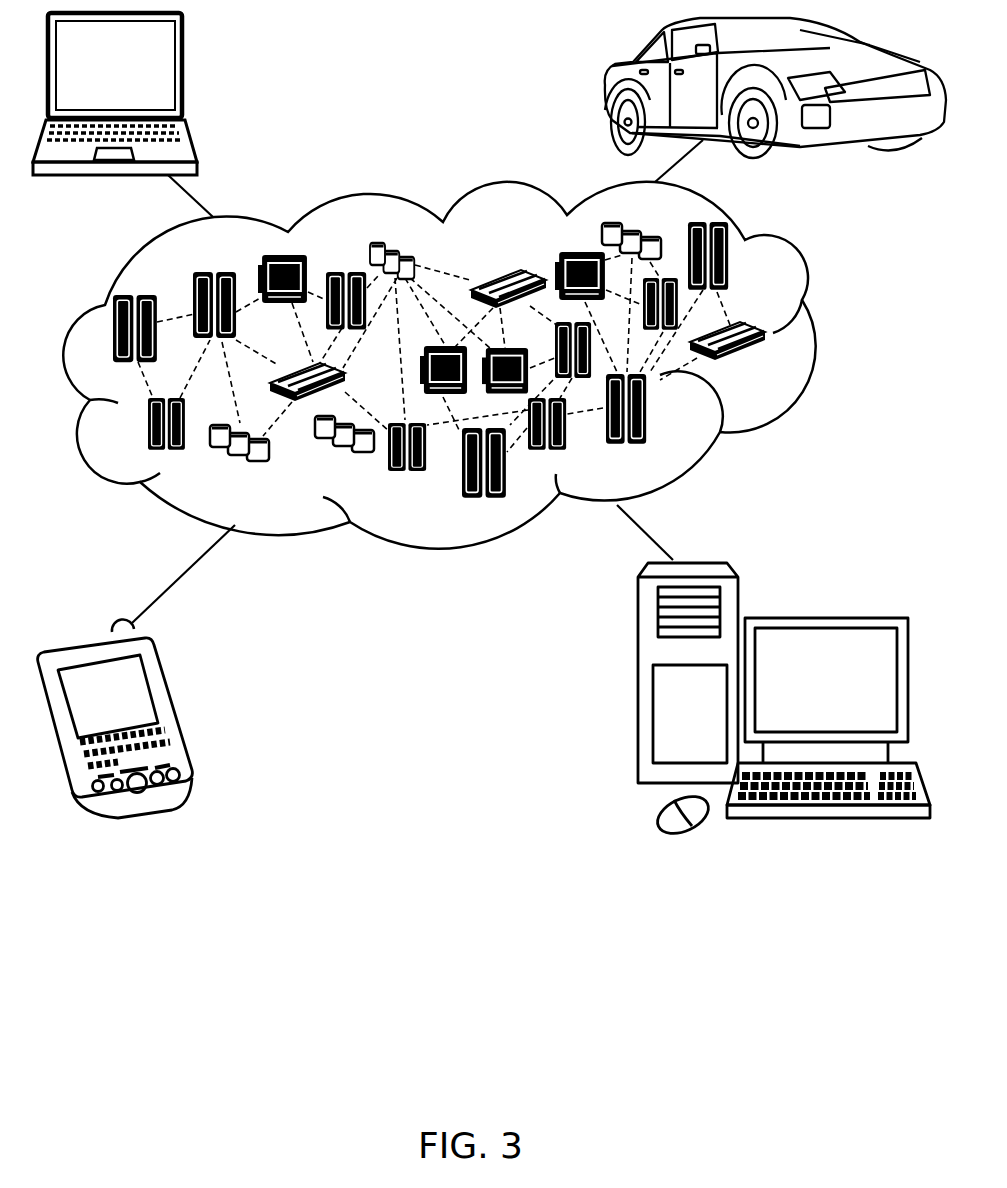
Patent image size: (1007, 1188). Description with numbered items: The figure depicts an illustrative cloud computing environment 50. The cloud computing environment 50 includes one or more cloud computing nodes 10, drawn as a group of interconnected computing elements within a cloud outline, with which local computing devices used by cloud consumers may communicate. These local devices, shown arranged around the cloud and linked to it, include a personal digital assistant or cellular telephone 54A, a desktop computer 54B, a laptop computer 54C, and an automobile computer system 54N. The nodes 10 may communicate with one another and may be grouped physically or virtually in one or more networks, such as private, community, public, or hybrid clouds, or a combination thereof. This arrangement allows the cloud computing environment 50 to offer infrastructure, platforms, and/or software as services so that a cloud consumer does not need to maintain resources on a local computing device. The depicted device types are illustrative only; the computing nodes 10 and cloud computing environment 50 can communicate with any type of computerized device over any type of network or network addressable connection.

The cloud computing environment 50 is at (825, 338).
The cloud computing nodes 10 is at (772, 370).
The personal digital assistant or cellular telephone 54A is at (172, 710).
The desktop computer 54B is at (822, 618).
The laptop computer 54C is at (183, 74).
The automobile computer system 54N is at (612, 90).